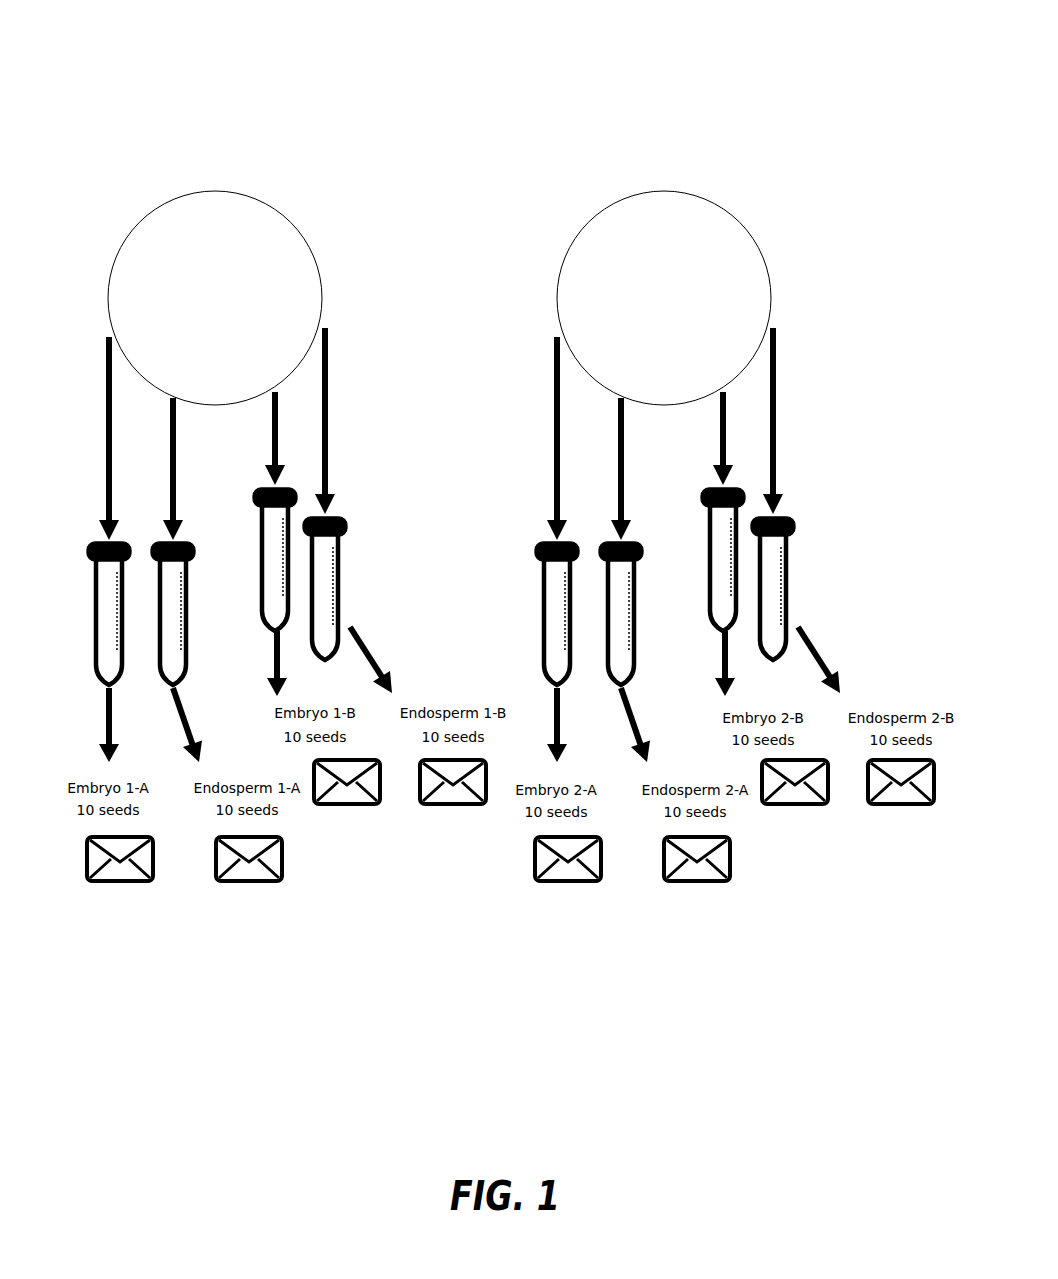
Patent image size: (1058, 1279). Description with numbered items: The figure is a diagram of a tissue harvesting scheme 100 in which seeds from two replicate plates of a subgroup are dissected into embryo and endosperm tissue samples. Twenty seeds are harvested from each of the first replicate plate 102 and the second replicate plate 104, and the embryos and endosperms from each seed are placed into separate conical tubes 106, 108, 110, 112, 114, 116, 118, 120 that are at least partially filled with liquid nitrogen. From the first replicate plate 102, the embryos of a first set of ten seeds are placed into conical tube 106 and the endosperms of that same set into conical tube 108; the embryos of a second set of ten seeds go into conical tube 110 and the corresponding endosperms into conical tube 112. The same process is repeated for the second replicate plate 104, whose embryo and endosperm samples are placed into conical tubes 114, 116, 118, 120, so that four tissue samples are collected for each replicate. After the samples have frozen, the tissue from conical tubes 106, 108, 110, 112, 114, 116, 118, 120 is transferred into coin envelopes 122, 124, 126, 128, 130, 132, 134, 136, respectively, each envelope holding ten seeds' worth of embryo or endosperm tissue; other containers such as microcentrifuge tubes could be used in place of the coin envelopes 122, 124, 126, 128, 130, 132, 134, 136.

The tissue harvesting scheme 100 is at (396, 90).
The first replicate plate 102 is at (205, 210).
The second replicate plate 104 is at (698, 222).
The conical tube 106 is at (103, 655).
The conical tube 108 is at (175, 667).
The conical tube 110 is at (268, 558).
The conical tube 112 is at (332, 605).
The conical tube 114 is at (552, 648).
The conical tube 116 is at (618, 672).
The conical tube 118 is at (718, 585).
The conical tube 120 is at (772, 588).
The coin envelope 122 is at (120, 869).
The coin envelope 124 is at (249, 869).
The coin envelope 126 is at (347, 792).
The coin envelope 128 is at (453, 792).
The coin envelope 130 is at (568, 869).
The coin envelope 132 is at (697, 869).
The coin envelope 134 is at (795, 792).
The coin envelope 136 is at (901, 792).